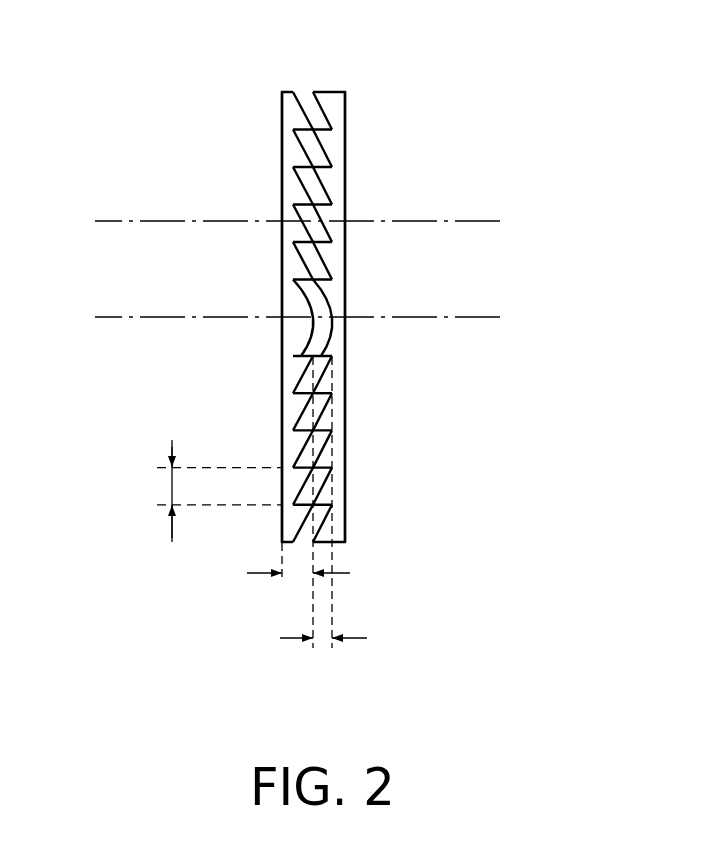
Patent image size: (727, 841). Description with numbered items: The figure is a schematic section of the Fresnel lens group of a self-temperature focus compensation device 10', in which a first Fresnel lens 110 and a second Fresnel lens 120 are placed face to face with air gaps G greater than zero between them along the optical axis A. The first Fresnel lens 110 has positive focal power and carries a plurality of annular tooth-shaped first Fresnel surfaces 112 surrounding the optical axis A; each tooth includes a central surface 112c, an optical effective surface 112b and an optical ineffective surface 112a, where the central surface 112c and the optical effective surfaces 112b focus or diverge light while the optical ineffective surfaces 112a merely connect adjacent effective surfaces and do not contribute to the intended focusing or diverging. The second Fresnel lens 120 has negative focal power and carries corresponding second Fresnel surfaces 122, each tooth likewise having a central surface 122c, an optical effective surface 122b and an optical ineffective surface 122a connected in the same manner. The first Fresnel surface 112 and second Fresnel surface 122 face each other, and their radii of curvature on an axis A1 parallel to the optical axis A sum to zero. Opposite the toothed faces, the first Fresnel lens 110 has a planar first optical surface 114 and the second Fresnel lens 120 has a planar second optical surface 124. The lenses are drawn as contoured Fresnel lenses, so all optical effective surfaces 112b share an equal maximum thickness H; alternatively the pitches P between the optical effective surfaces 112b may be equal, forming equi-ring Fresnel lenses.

The self-temperature focus compensation device 10' is at (315, 278).
The first Fresnel lens 110 is at (230, 323).
The first Fresnel surface 112 is at (230, 316).
The optical ineffective surface 112a is at (301, 394).
The optical effective surface 112b is at (297, 420).
The central surface 112c is at (306, 337).
The first optical surface 114 is at (281, 155).
The second Fresnel lens 120 is at (395, 323).
The second Fresnel surface 122 is at (395, 316).
The optical ineffective surface 122a is at (324, 395).
The optical effective surface 122b is at (321, 420).
The central surface 122c is at (329, 343).
The second optical surface 124 is at (346, 155).
The optical axis A is at (486, 317).
The axis A1 is at (486, 221).
The pitch P is at (214, 491).
The maximum thickness H is at (298, 502).
The air gap G is at (323, 661).